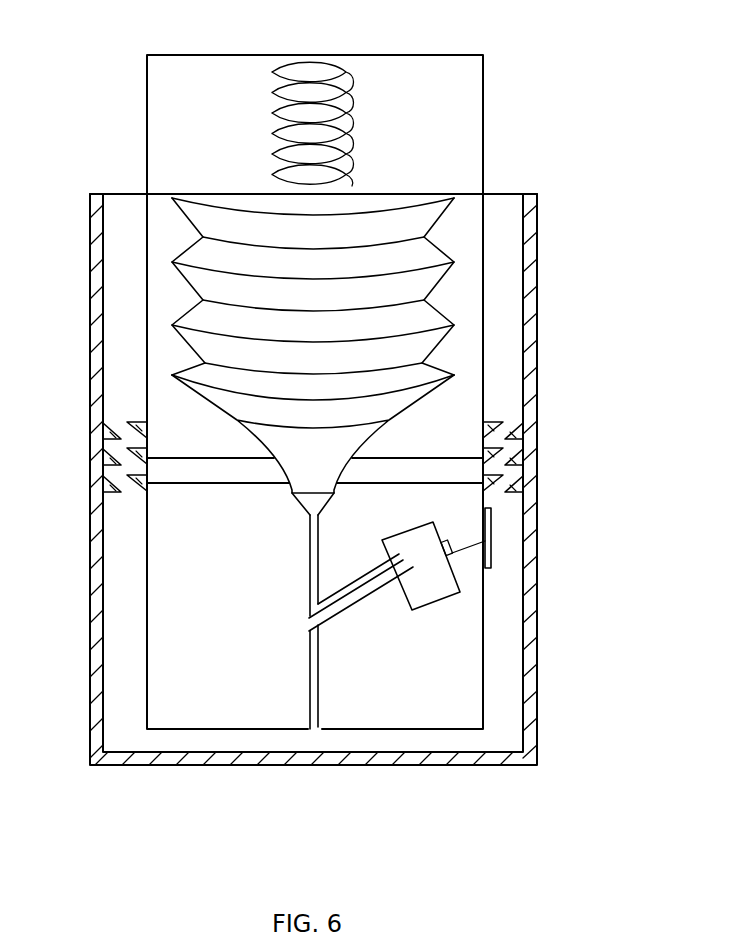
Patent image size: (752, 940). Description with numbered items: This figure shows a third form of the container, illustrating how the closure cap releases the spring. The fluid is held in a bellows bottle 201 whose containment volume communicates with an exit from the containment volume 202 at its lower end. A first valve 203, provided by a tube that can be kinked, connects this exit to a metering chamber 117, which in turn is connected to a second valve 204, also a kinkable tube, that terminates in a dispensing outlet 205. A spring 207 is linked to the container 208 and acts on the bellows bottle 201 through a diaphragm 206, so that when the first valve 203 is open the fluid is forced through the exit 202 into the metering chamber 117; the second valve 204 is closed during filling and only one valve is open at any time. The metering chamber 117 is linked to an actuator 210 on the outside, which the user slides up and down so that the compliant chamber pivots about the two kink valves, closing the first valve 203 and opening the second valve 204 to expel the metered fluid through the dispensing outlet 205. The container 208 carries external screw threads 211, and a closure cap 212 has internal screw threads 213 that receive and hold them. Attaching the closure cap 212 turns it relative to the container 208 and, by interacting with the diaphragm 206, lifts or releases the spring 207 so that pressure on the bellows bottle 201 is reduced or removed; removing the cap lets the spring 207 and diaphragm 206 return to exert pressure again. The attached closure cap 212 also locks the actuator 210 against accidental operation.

The container 208 is at (147, 106).
The spring 207 is at (342, 136).
The diaphragm 206 is at (468, 194).
The bellows bottle 201 is at (418, 321).
The exit from the containment volume 202 is at (311, 503).
The first valve 203 is at (309, 606).
The second valve 204 is at (316, 637).
The dispensing outlet 205 is at (318, 712).
The metering chamber 117 is at (437, 597).
The actuator 210 is at (491, 541).
The external screw threads 211 is at (142, 486).
The internal screw threads 213 is at (505, 437).
The closure cap 212 is at (218, 760).